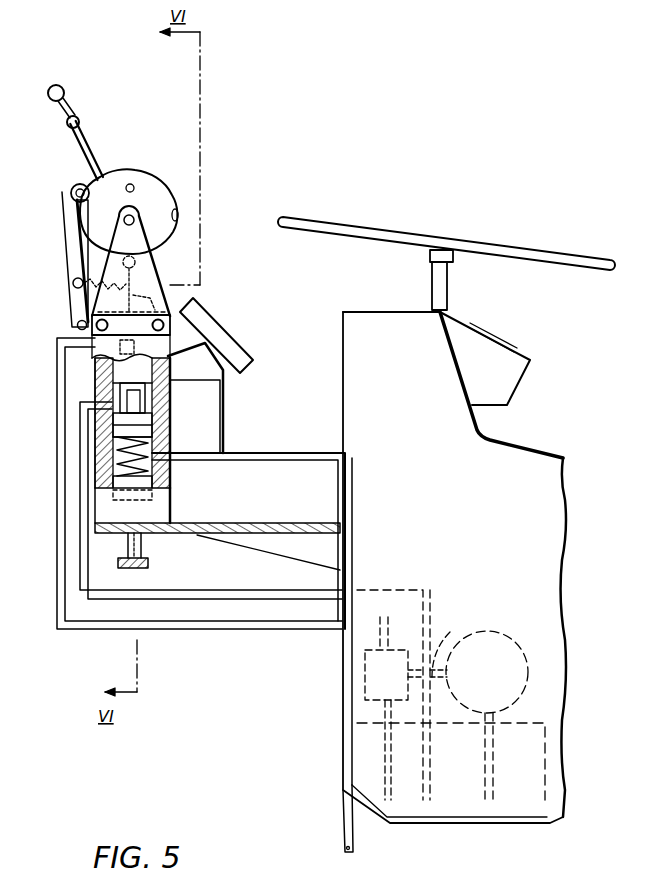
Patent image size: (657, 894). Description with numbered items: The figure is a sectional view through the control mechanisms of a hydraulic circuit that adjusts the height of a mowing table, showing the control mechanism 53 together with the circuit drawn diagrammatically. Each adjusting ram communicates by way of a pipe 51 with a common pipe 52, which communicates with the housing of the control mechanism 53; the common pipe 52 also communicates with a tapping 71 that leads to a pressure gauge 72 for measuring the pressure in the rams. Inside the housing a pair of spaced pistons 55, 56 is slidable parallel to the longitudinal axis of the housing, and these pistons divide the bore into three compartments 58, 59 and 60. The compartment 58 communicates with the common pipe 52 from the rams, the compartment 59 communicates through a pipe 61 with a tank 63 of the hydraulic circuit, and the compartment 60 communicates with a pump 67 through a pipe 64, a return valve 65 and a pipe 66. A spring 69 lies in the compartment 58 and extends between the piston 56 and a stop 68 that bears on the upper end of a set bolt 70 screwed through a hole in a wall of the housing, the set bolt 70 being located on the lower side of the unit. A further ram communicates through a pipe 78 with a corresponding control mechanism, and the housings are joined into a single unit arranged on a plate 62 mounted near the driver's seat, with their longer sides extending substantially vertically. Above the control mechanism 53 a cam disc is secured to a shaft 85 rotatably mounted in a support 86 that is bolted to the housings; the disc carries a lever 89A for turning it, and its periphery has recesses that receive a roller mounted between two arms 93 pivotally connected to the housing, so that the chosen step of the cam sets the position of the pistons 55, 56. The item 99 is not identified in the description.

The pipe 51 is at (478, 826).
The common pipe 52 is at (306, 450).
The control mechanism 53 is at (174, 492).
The piston 55 is at (141, 388).
The piston 56 is at (143, 427).
The compartment 58 is at (113, 468).
The compartment 59 is at (110, 420).
The compartment 60 is at (173, 361).
The pipe 61 is at (430, 598).
The plate 62 is at (253, 527).
The tank 63 is at (540, 765).
The pipe 64 is at (55, 377).
The return valve 65 is at (368, 662).
The pipe 66 is at (446, 642).
The pump 67 is at (515, 645).
The stop 68 is at (147, 480).
The spring 69 is at (143, 443).
The set bolt 70 is at (143, 547).
The tapping 71 is at (223, 422).
The pressure gauge 72 is at (253, 362).
The pipe 78 is at (344, 828).
The shaft 85 is at (129, 211).
The support 86 is at (157, 264).
The lever 89A is at (70, 100).
The arm 93 is at (68, 243).
The lever 99 is at (88, 134).